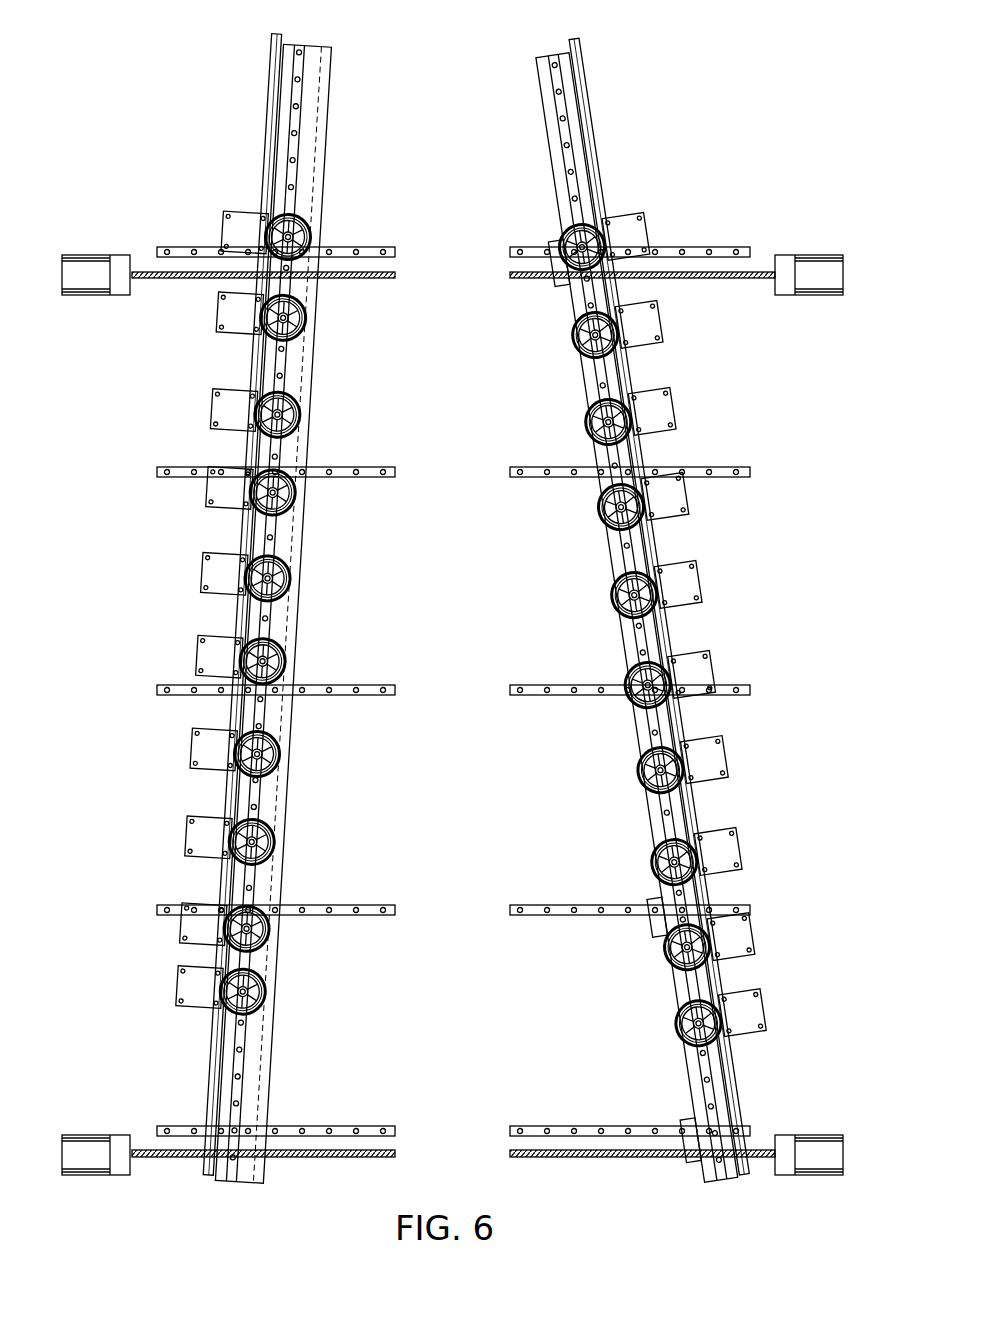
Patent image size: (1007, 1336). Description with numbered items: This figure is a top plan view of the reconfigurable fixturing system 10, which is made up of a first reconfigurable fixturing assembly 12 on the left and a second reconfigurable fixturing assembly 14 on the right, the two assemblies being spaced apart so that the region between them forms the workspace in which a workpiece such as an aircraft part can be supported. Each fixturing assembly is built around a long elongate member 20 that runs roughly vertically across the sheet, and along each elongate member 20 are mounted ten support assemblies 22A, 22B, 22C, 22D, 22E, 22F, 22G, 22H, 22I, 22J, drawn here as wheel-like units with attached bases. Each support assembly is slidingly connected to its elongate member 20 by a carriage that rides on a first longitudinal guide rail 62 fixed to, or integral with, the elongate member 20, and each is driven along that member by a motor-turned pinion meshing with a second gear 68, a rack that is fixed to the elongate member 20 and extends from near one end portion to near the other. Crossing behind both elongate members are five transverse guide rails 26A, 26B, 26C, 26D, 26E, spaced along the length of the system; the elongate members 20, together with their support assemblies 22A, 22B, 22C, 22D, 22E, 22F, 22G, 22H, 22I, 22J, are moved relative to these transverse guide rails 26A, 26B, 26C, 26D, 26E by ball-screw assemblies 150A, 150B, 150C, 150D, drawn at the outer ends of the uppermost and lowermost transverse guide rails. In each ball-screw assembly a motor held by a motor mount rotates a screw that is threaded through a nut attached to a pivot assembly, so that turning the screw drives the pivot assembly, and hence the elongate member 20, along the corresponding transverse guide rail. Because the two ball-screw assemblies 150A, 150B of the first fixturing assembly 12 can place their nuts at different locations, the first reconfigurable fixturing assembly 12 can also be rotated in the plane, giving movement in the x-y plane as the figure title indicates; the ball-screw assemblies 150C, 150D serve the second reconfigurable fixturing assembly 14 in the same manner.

The reconfigurable fixturing system 10 is at (703, 92).
The first reconfigurable fixturing assembly 12 is at (347, 100).
The second reconfigurable fixturing assembly 14 is at (512, 100).
The elongate member 20 is at (319, 133).
The support assembly 22A is at (178, 990).
The support assembly 22B is at (757, 938).
The support assembly 22C is at (744, 853).
The support assembly 22D is at (730, 760).
The support assembly 22E is at (455, 673).
The support assembly 22F is at (702, 585).
The support assembly 22G is at (690, 502).
The support assembly 22H is at (674, 404).
The support assembly 22I is at (664, 326).
The support assembly 22J is at (640, 221).
The transverse guide rail 26A is at (360, 1126).
The transverse guide rail 26B is at (360, 905).
The transverse guide rail 26C is at (360, 685).
The transverse guide rail 26D is at (360, 466).
The transverse guide rail 26E is at (360, 246).
The first longitudinal guide rail 62 is at (243, 1076).
The second gear 68 is at (212, 1098).
The ball-screw assembly 150A is at (158, 1192).
The ball-screw assembly 150B is at (135, 232).
The ball-screw assembly 150C is at (774, 1195).
The ball-screw assembly 150D is at (855, 236).